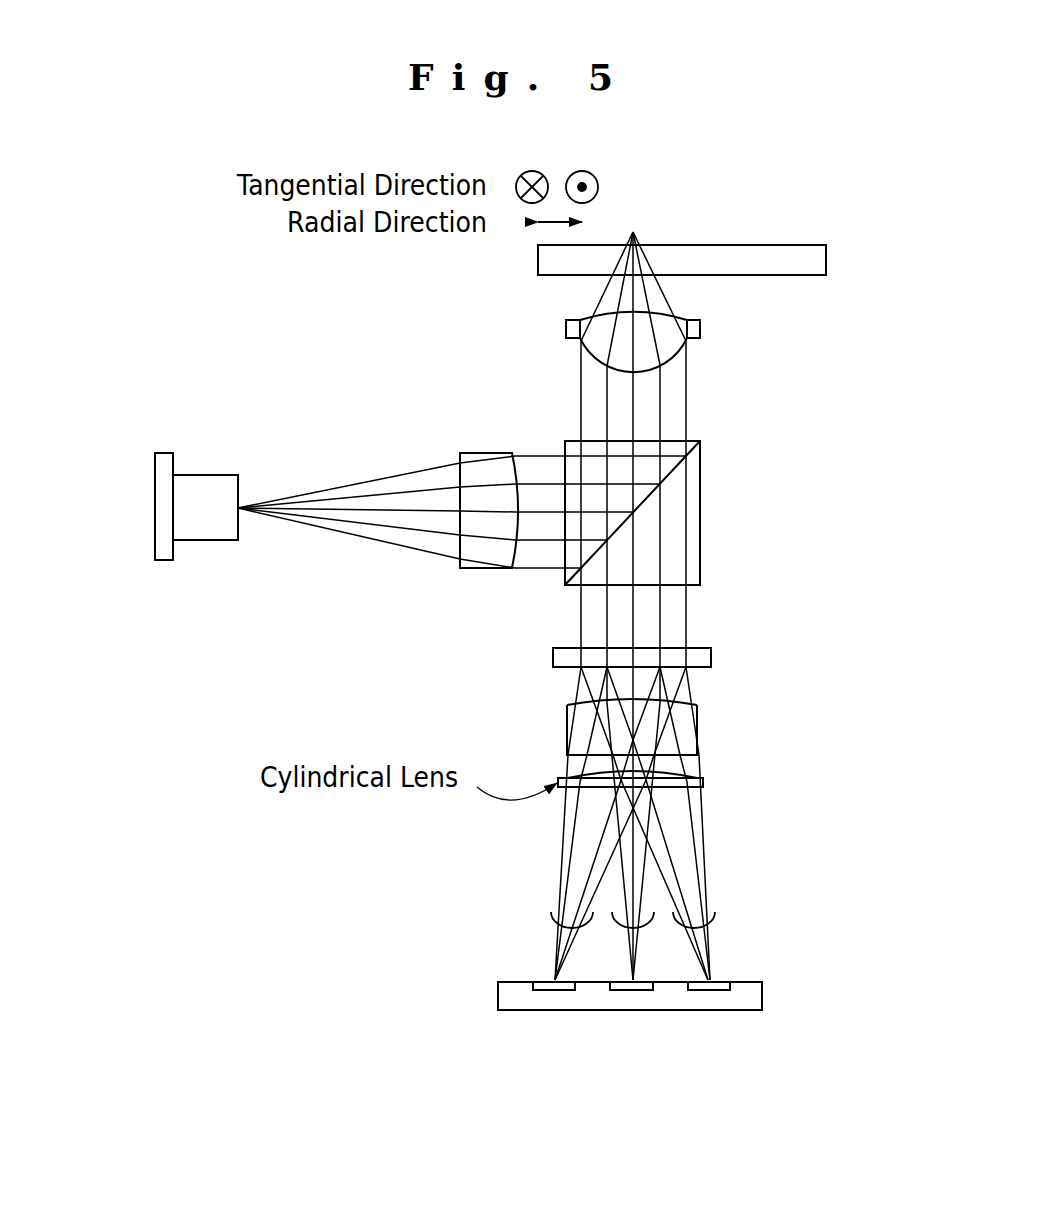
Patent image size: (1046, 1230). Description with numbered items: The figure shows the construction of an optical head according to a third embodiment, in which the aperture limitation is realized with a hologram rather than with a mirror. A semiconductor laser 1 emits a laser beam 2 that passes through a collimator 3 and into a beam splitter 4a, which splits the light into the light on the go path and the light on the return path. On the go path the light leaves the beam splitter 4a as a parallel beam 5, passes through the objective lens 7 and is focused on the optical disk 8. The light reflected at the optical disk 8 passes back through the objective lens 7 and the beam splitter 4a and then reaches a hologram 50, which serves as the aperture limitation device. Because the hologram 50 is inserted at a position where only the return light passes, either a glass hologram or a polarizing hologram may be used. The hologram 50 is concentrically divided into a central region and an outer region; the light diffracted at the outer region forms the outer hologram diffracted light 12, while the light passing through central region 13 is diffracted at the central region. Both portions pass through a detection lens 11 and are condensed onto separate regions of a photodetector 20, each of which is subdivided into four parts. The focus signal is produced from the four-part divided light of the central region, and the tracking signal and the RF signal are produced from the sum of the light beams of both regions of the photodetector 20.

The semiconductor laser 1 is at (153, 453).
The laser beam 2 is at (323, 495).
The collimator 3 is at (460, 572).
The beam splitter 4a is at (563, 440).
The parallel beam 5 is at (690, 403).
The objective lens 7 is at (568, 322).
The optical disk 8 is at (832, 253).
The detection lens 11 is at (703, 710).
The outer hologram diffracted light 12 is at (667, 918).
The light passing through central region 13 is at (650, 930).
The photodetector 20 is at (496, 997).
The hologram 50 is at (549, 672).